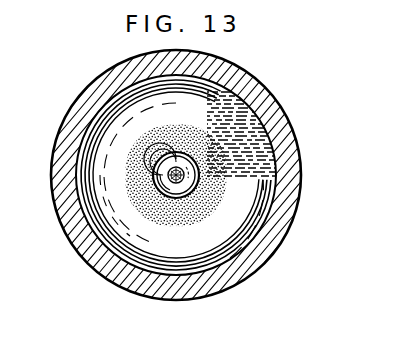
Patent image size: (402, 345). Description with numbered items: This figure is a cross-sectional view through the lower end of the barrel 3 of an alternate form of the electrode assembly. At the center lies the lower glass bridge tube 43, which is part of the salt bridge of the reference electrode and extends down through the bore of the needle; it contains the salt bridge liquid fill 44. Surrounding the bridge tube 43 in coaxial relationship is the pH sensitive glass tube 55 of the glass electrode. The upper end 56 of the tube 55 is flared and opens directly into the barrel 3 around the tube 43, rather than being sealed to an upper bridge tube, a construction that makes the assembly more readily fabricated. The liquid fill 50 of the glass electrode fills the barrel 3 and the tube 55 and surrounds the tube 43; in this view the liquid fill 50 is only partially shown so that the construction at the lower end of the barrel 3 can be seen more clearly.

The barrel 3 is at (88, 100).
The lower glass bridge tube 43 is at (140, 200).
The salt bridge liquid fill 44 is at (177, 175).
The liquid fill 50 is at (243, 140).
The pH sensitive glass tube 55 is at (172, 188).
The upper end of the tube 56 is at (190, 190).